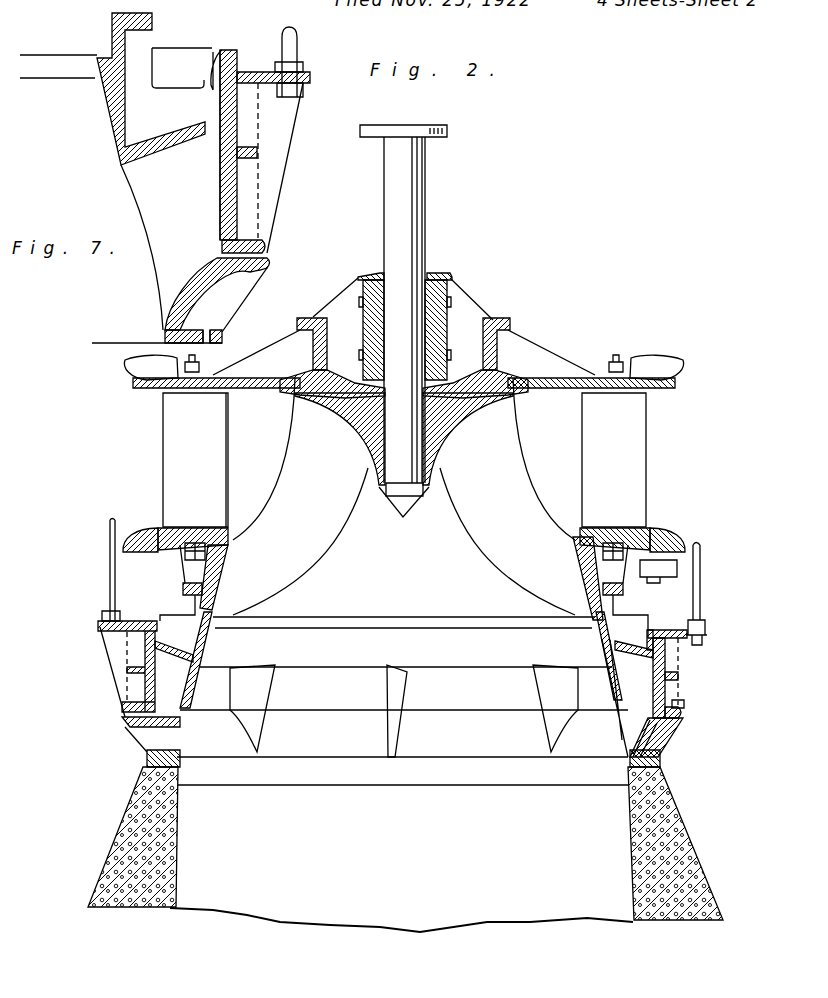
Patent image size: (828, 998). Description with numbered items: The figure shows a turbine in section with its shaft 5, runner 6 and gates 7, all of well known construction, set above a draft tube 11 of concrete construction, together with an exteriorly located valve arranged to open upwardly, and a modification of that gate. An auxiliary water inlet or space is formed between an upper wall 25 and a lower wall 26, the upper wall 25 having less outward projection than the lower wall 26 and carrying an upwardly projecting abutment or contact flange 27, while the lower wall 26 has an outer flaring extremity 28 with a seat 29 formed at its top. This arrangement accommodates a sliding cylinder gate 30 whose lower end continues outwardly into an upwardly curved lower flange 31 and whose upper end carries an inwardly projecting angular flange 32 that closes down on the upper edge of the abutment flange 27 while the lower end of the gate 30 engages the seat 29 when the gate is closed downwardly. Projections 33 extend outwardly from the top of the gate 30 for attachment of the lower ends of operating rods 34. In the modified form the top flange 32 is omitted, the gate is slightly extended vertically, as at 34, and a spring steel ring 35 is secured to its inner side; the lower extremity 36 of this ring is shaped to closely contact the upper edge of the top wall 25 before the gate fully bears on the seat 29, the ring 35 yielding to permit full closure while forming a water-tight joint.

In FIG. 2, the shaft 5 is at (432, 217).
In FIG. 2, the runner 6 is at (404, 496).
In FIG. 2, the gates 7 is at (404, 460).
In FIG. 2, the draft tube 11 is at (648, 843).
In FIG. 7, the upper wall 25 is at (168, 143).
In FIG. 2, the upper wall 25 is at (602, 618).
In FIG. 2, the lower wall 26 is at (623, 737).
In FIG. 2, the abutment or contact flange 27 is at (667, 646).
In FIG. 2, the outer flaring extremity 28 is at (673, 728).
In FIG. 2, the seat 29 is at (682, 719).
In FIG. 2, the sliding cylinder gate 30 is at (667, 659).
In FIG. 2, the upwardly curved lower flange 31 is at (680, 708).
In FIG. 2, the inwardly projecting angular flange 32 is at (650, 630).
In FIG. 2, the projections 33 is at (710, 631).
In FIG. 7, the operating rods 34 is at (233, 52).
In FIG. 2, the operating rods 34 is at (701, 597).
In FIG. 7, the spring steel ring 35 is at (217, 53).
In FIG. 7, the lower extremity 36 is at (203, 88).